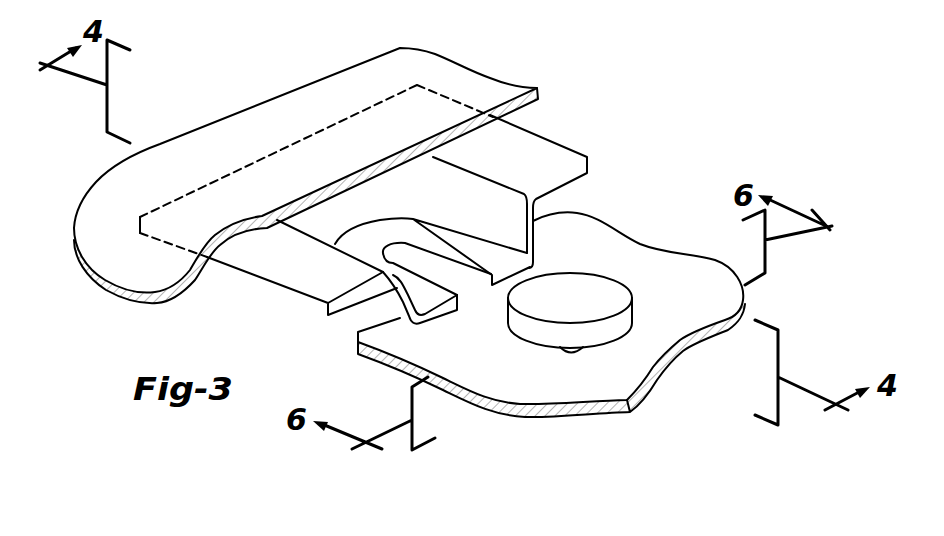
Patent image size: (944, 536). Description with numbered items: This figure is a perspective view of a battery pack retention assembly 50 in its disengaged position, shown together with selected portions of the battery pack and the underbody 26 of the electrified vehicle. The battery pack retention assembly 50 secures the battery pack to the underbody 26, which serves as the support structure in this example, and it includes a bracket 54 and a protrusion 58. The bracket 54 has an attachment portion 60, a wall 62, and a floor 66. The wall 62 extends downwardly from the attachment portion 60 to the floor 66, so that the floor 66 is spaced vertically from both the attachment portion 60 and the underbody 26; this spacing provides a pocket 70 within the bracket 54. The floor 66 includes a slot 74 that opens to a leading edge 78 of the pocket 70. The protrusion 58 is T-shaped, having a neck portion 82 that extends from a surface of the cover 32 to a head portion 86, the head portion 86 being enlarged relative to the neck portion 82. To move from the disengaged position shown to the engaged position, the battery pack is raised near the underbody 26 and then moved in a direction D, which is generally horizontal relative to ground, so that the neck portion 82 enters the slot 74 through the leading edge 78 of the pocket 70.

The underbody 26 is at (450, 76).
The battery pack retention assembly 50 is at (598, 66).
The attachment portion 60 is at (547, 160).
The pocket 70 is at (458, 198).
The wall 62 is at (510, 222).
The leading edge 78 is at (520, 270).
The protrusion 58 is at (585, 287).
The cover 32 is at (667, 267).
The bracket 54 is at (265, 278).
The floor 66 is at (422, 298).
The slot 74 is at (481, 316).
The neck portion 82 is at (570, 355).
The head portion 86 is at (602, 332).
The direction D is at (654, 332).